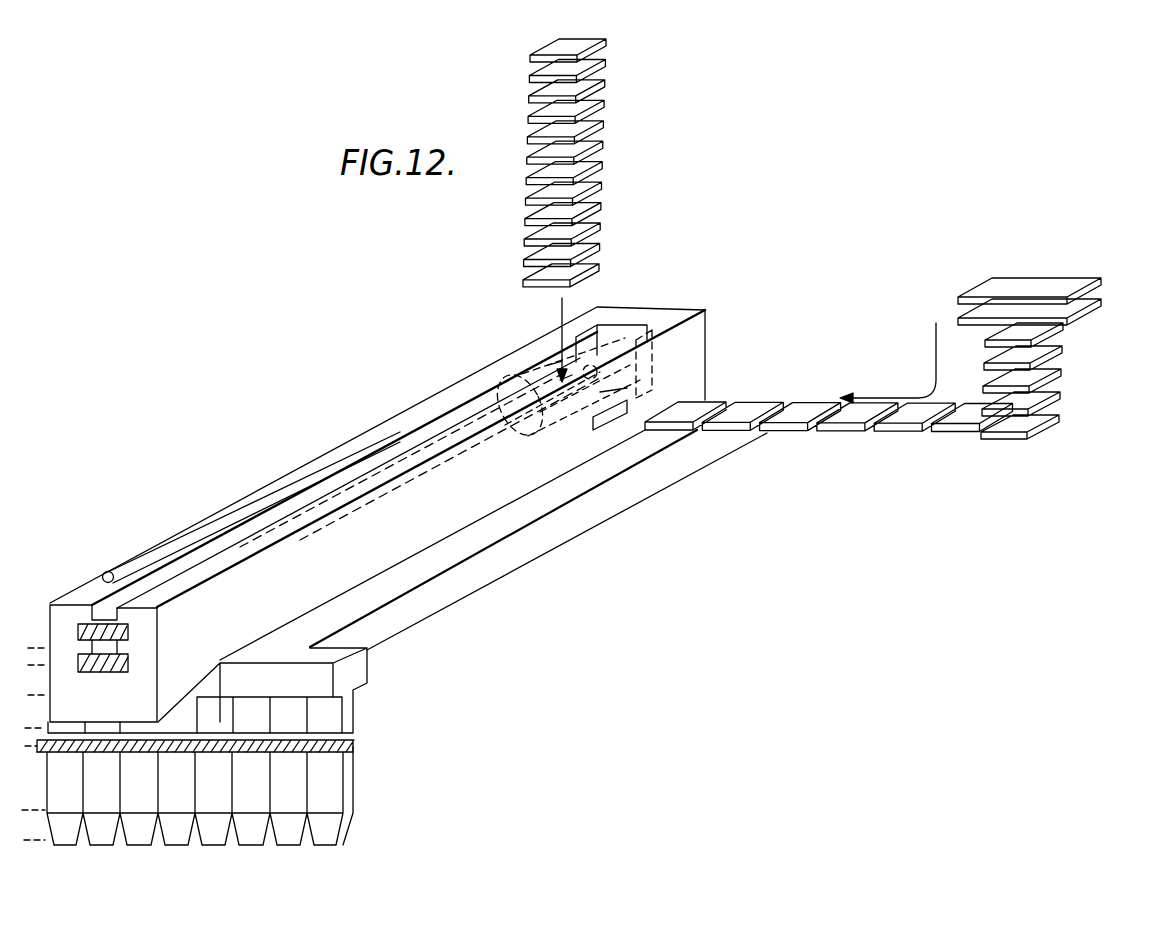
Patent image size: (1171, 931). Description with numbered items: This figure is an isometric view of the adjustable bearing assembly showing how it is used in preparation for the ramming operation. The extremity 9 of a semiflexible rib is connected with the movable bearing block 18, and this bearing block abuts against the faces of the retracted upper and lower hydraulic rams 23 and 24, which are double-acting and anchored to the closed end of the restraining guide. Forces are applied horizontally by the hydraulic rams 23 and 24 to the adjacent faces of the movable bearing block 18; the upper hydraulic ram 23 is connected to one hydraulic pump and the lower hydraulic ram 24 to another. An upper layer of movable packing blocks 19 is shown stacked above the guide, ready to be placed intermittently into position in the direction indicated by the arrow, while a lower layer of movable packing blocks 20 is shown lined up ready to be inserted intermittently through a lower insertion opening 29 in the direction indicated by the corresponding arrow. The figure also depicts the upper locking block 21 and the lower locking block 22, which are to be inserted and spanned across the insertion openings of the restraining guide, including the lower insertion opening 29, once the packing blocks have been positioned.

The extremity of the semiflexible rib 9 is at (116, 545).
The movable bearing block 18 is at (523, 346).
The upper layer of movable packing blocks 19 is at (530, 273).
The lower layer of movable packing blocks 20 is at (748, 394).
The upper locking block 21 is at (1097, 284).
The lower locking block 22 is at (1097, 313).
The upper hydraulic ram 23 is at (598, 338).
The lower hydraulic ram 24 is at (644, 372).
The insertion opening 29 is at (613, 393).